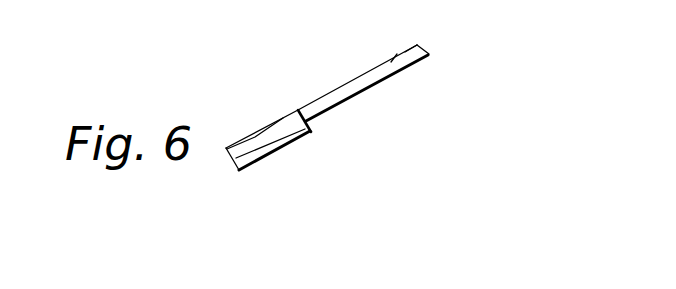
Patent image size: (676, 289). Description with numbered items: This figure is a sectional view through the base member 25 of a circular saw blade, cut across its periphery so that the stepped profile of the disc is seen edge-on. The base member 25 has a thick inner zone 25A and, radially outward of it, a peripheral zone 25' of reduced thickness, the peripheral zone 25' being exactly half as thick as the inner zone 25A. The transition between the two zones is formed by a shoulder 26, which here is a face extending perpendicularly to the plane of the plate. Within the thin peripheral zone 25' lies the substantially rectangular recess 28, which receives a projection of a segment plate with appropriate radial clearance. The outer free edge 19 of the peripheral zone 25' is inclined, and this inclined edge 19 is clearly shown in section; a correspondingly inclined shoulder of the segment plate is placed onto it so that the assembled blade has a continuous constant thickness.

The inclined outer edge 19 is at (417, 45).
The base member 25 is at (345, 55).
The peripheral zone 25' is at (444, 81).
The inner zone 25A is at (265, 145).
The shoulder 26 is at (313, 130).
The recess 28 is at (347, 92).